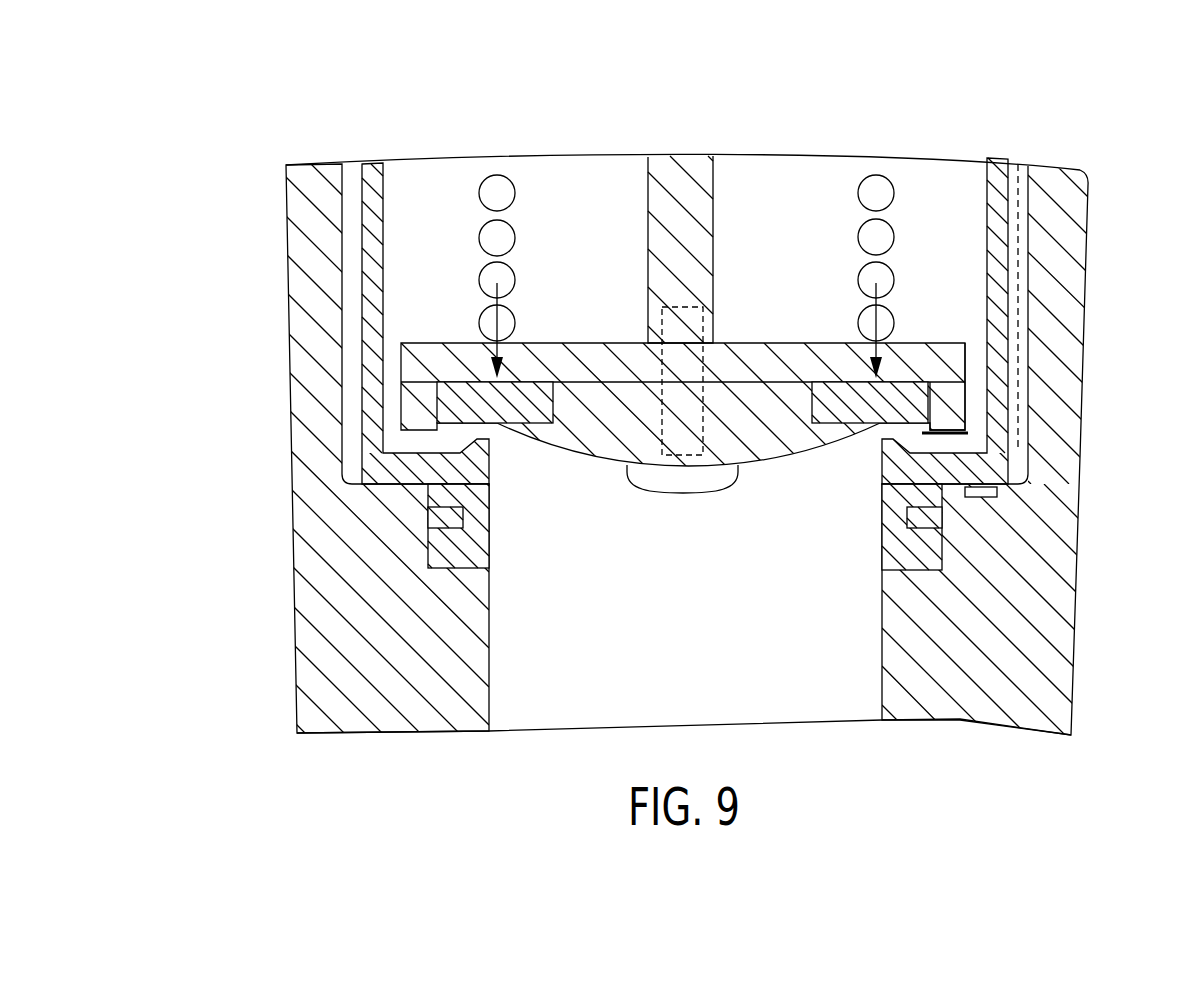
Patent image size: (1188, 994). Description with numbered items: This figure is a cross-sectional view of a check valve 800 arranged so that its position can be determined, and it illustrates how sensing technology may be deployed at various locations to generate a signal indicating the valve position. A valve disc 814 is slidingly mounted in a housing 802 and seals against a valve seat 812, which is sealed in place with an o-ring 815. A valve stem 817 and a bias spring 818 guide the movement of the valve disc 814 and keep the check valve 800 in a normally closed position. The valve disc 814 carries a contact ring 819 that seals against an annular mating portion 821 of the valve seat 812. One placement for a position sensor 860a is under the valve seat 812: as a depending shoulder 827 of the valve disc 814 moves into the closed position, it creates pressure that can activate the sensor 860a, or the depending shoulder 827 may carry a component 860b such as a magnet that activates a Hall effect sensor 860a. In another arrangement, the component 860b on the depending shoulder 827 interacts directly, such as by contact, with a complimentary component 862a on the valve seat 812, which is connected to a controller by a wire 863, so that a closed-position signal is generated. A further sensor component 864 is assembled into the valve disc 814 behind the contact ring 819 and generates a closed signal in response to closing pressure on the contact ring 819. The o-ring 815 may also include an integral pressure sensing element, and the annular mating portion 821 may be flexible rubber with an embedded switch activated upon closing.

The check valve 800 is at (136, 124).
The housing 802 is at (1067, 384).
The valve seat 812 is at (935, 440).
The valve disc 814 is at (765, 358).
The o-ring 815 is at (448, 517).
The valve stem 817 is at (699, 160).
The bias spring 818 is at (499, 185).
The contact ring 819 is at (452, 402).
The annular mating portion 821 is at (472, 444).
The depending shoulder 827 is at (967, 406).
The position sensor 860a is at (990, 498).
The sensor component 860b is at (950, 436).
The complimentary component 862a is at (920, 445).
The wire 863 is at (1017, 322).
The sensor component 864 is at (880, 388).